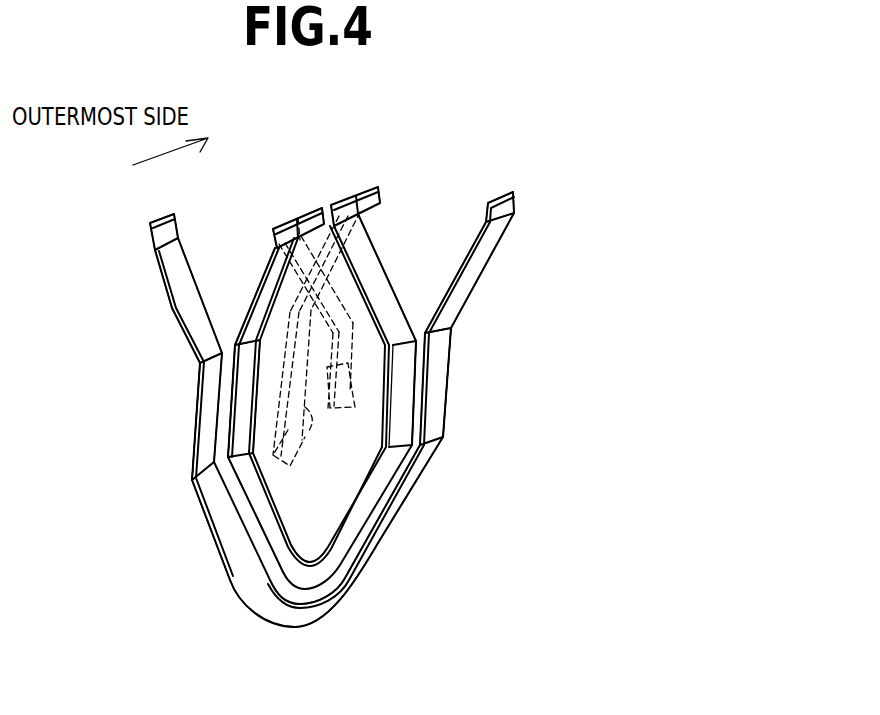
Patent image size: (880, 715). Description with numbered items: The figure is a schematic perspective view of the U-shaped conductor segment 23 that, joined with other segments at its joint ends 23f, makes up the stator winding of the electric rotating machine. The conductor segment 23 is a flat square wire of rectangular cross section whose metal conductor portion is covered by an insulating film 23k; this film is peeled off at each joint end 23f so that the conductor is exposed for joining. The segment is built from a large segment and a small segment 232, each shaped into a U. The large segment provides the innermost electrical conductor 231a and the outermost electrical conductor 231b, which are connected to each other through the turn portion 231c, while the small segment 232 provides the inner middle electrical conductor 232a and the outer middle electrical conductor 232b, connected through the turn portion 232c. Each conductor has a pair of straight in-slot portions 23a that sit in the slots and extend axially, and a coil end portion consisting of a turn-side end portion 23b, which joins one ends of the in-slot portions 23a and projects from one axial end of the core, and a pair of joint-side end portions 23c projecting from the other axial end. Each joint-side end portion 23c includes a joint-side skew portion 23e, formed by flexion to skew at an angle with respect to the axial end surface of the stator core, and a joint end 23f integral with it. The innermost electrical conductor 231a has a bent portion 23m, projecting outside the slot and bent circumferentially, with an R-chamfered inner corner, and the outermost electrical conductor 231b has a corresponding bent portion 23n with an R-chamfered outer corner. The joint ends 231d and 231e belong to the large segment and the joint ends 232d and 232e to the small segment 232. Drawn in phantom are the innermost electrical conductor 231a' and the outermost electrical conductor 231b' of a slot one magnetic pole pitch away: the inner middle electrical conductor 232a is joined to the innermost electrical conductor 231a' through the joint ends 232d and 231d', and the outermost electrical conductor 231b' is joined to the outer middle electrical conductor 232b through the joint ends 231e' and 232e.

The conductor segment 23 is at (309, 394).
The in-slot portion 23a is at (194, 447).
The turn-side end portion 23b is at (384, 510).
The joint-side end portion 23c is at (258, 294).
The joint-side skew portion 23e is at (265, 312).
The joint end 23f is at (273, 230).
The insulating film 23k is at (252, 537).
The bent portion 23m is at (196, 368).
The bent portion 23n is at (454, 327).
The innermost electrical conductor 231a is at (153, 416).
The outermost electrical conductor 231b is at (493, 386).
The turn portion of large segment 231c is at (293, 622).
The joint end of innermost electrical conductor 231d is at (117, 254).
The joint end of outermost electrical conductor 231e is at (549, 202).
The small segment 232 is at (396, 262).
The inner middle electrical conductor 232a is at (238, 428).
The outer middle electrical conductor 232b is at (403, 425).
The turn portion of small segment 232c is at (308, 578).
The joint end of inner middle electrical conductor 232d is at (312, 227).
The joint end of outer middle electrical conductor 232e is at (347, 213).
The innermost electrical conductor 231a' is at (358, 383).
The outermost electrical conductor 231b' is at (309, 405).
The joint end of innermost electrical conductor 231d' is at (270, 275).
The joint end of outermost electrical conductor 231e' is at (369, 200).